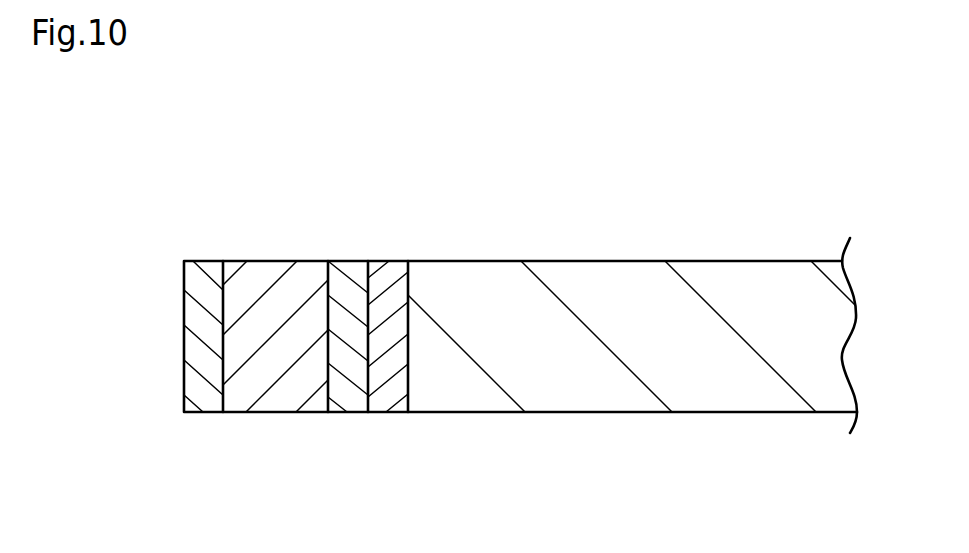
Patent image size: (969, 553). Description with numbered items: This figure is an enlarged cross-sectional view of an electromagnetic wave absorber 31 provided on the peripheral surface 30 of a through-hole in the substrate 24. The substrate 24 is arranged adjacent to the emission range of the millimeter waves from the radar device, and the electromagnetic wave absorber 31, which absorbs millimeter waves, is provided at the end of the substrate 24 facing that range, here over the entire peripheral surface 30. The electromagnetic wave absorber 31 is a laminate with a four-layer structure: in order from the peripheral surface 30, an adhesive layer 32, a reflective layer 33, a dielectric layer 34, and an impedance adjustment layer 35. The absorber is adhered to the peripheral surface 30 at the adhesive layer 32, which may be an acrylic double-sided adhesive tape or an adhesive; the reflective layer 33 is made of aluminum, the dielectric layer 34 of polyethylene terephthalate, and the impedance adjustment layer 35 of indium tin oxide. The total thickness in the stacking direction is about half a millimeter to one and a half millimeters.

The substrate 24 is at (603, 261).
The peripheral surface 30 is at (399, 318).
The electromagnetic wave absorber 31 is at (413, 487).
The adhesive layer 32 is at (398, 413).
The reflective layer 33 is at (357, 413).
The dielectric layer 34 is at (278, 413).
The impedance adjustment layer 35 is at (212, 413).